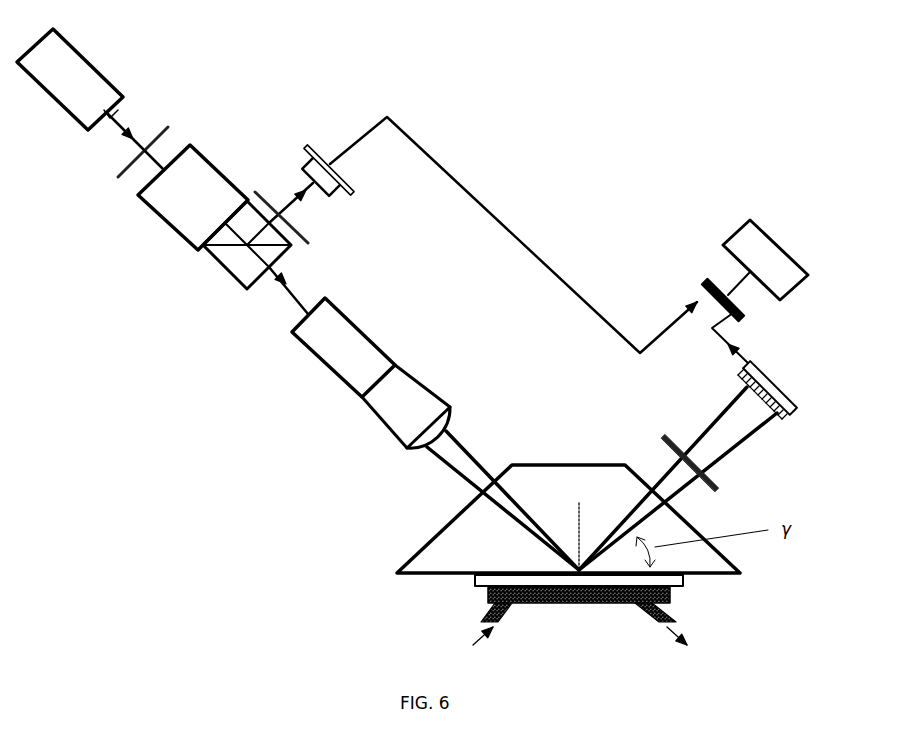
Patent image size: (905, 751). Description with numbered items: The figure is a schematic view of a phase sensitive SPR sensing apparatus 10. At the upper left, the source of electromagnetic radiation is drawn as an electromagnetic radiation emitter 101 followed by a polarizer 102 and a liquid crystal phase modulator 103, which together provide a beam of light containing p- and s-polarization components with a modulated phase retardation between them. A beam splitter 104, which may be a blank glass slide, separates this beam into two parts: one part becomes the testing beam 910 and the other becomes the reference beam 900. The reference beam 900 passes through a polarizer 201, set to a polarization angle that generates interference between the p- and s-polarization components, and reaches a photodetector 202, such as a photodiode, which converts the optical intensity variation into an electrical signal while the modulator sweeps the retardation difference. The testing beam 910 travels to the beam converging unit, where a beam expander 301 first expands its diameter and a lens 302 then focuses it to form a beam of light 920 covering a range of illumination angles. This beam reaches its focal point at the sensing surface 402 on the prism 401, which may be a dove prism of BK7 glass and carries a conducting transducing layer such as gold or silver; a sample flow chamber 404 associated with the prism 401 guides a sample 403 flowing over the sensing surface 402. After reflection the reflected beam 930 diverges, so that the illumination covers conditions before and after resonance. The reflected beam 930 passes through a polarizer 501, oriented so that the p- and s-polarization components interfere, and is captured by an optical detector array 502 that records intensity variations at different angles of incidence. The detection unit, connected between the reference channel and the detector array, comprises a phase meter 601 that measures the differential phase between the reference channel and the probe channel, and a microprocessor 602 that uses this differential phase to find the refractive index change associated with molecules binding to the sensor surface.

The phase sensitive SPR sensing apparatus 10 is at (335, 465).
The electromagnetic radiation emitter 101 is at (70, 79).
The polarizer 102 is at (156, 138).
The liquid crystal phase modulator 103 is at (178, 182).
The beam splitter 104 is at (234, 251).
The polarizer 201 is at (284, 204).
The photodetector 202 is at (328, 157).
The beam expander 301 is at (347, 347).
The lens 302 is at (422, 406).
The prism 401 is at (568, 503).
The sensing surface 402 is at (475, 577).
The sample 403 is at (672, 593).
The sample flow chamber 404 is at (634, 609).
The polarizer 501 is at (712, 467).
The optical detector array 502 is at (790, 390).
The phase meter 601 is at (711, 310).
The microprocessor 602 is at (762, 245).
The reference beam 900 is at (513, 235).
The testing beam 910 is at (275, 295).
The focused beam of light 920 is at (494, 500).
The reflected beam 930 is at (660, 472).